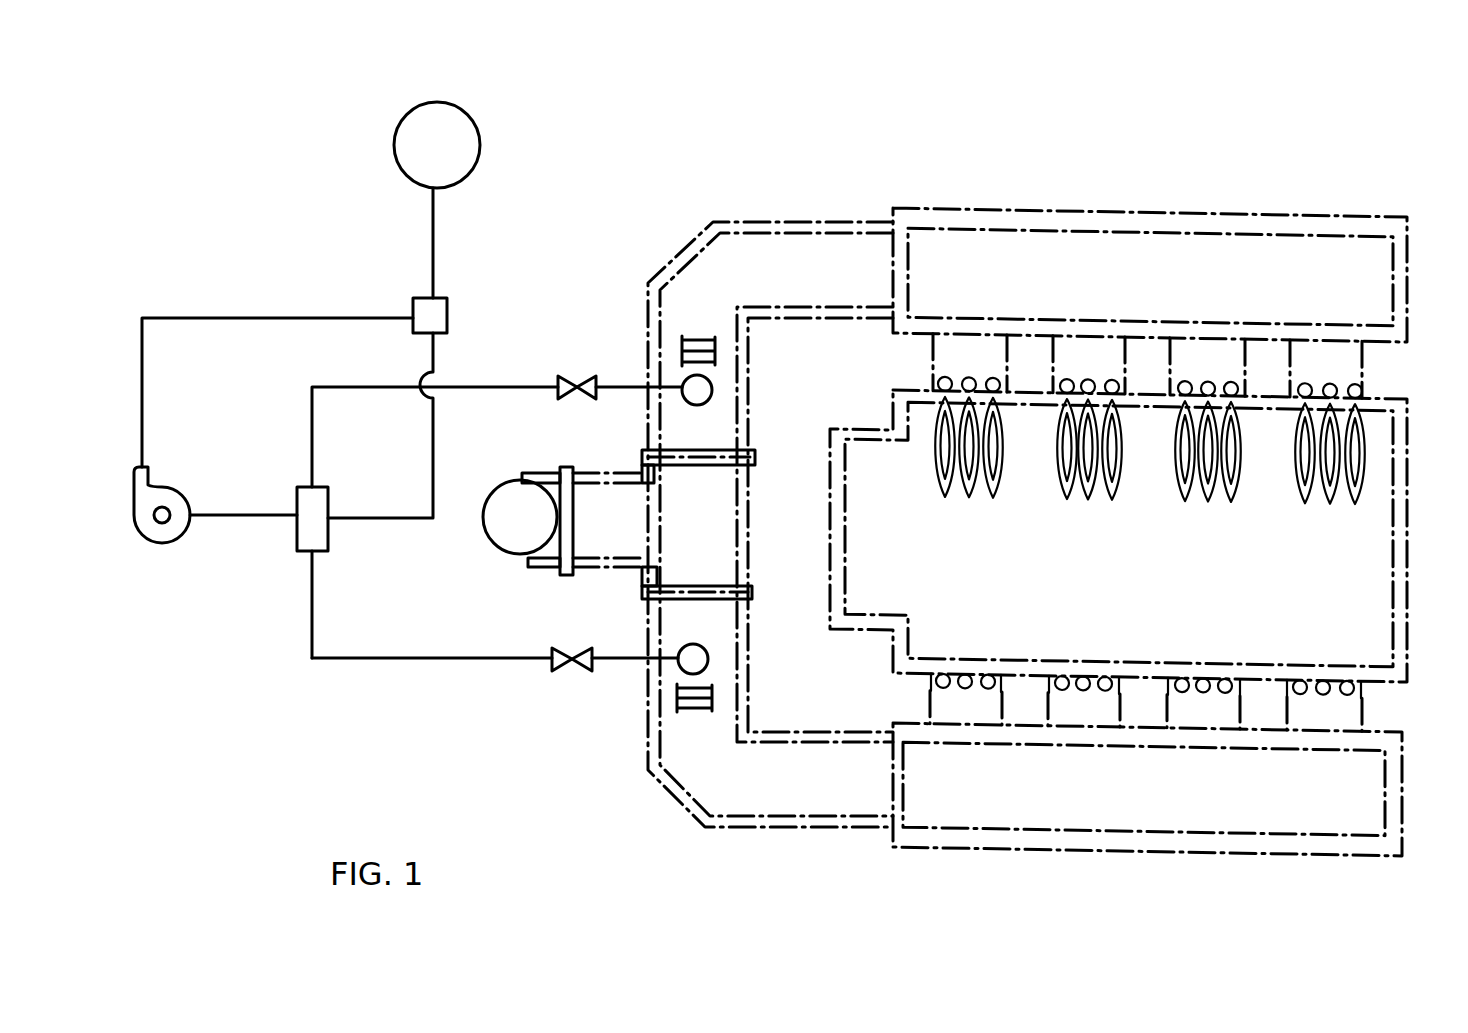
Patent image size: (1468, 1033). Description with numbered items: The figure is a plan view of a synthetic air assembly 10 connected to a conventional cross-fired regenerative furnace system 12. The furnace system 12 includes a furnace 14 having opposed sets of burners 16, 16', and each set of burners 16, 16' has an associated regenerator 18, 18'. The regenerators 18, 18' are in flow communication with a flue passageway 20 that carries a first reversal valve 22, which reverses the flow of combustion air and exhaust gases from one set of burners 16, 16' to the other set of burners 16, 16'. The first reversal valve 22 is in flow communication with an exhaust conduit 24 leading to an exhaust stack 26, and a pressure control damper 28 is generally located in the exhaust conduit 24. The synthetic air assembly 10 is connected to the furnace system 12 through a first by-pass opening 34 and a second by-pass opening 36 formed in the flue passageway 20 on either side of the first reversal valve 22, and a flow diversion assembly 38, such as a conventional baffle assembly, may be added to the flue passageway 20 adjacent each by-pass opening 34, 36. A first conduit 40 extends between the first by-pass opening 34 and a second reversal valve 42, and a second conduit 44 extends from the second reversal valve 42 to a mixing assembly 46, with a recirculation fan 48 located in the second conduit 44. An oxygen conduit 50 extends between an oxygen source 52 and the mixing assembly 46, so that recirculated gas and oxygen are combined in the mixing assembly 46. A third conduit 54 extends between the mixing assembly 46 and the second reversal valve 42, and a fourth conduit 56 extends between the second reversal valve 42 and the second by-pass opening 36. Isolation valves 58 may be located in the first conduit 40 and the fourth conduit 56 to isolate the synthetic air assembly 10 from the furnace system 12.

The synthetic air assembly 10 is at (318, 190).
The cross-fired regenerative furnace system 12 is at (1036, 150).
The furnace 14 is at (1357, 502).
The burners 16 is at (1158, 328).
The burners 16' is at (1146, 666).
The regenerator 18 is at (1150, 275).
The regenerator 18' is at (1147, 815).
The flue passageway 20 is at (745, 246).
The first reversal valve 22 is at (707, 513).
The exhaust conduit 24 is at (598, 507).
The exhaust stack 26 is at (483, 532).
The pressure control damper 28 is at (562, 578).
The first by-pass opening 34 is at (713, 655).
The second by-pass opening 36 is at (713, 392).
The flow diversion assembly 38 is at (718, 352).
The first conduit 40 is at (418, 660).
The second reversal valve 42 is at (296, 543).
The second conduit 44 is at (243, 318).
The mixing assembly 46 is at (447, 300).
The recirculation fan 48 is at (166, 543).
The oxygen conduit 50 is at (435, 218).
The oxygen source 52 is at (422, 163).
The third conduit 54 is at (436, 352).
The fourth conduit 56 is at (334, 376).
The isolation valves 58 is at (578, 377).